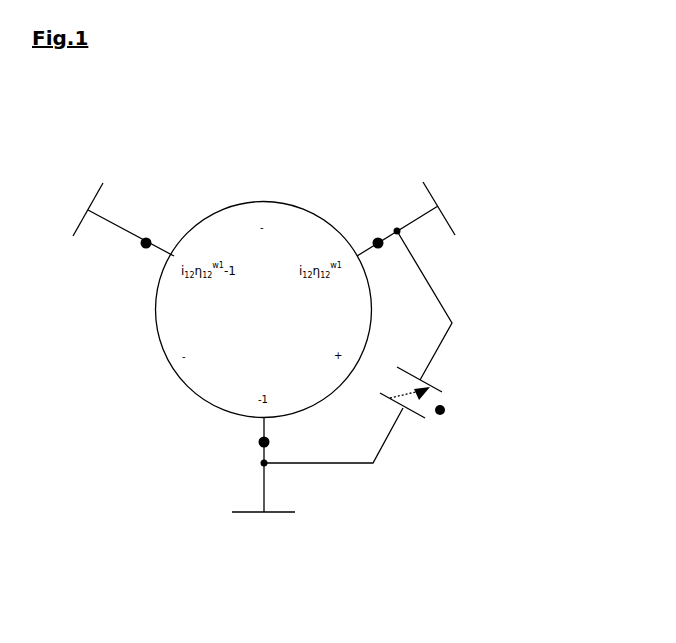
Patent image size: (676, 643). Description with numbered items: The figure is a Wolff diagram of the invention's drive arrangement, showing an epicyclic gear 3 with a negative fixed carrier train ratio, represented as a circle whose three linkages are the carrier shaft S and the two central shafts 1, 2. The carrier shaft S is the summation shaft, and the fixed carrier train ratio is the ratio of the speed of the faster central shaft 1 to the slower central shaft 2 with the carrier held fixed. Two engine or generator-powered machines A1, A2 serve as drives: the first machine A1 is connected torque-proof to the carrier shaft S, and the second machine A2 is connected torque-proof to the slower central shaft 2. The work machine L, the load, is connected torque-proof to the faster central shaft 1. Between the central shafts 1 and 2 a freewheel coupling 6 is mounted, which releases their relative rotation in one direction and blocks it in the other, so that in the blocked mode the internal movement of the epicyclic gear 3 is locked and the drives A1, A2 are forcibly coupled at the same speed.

The faster central shaft 1 is at (259, 443).
The slower central shaft 2 is at (378, 243).
The epicyclic gear 3 is at (168, 538).
The freewheel coupling 6 is at (445, 408).
The carrier shaft S is at (146, 240).
The first engine or generator-powered machine A1 is at (113, 219).
The second engine or generator-powered machine A2 is at (414, 219).
The work machine L is at (263, 526).